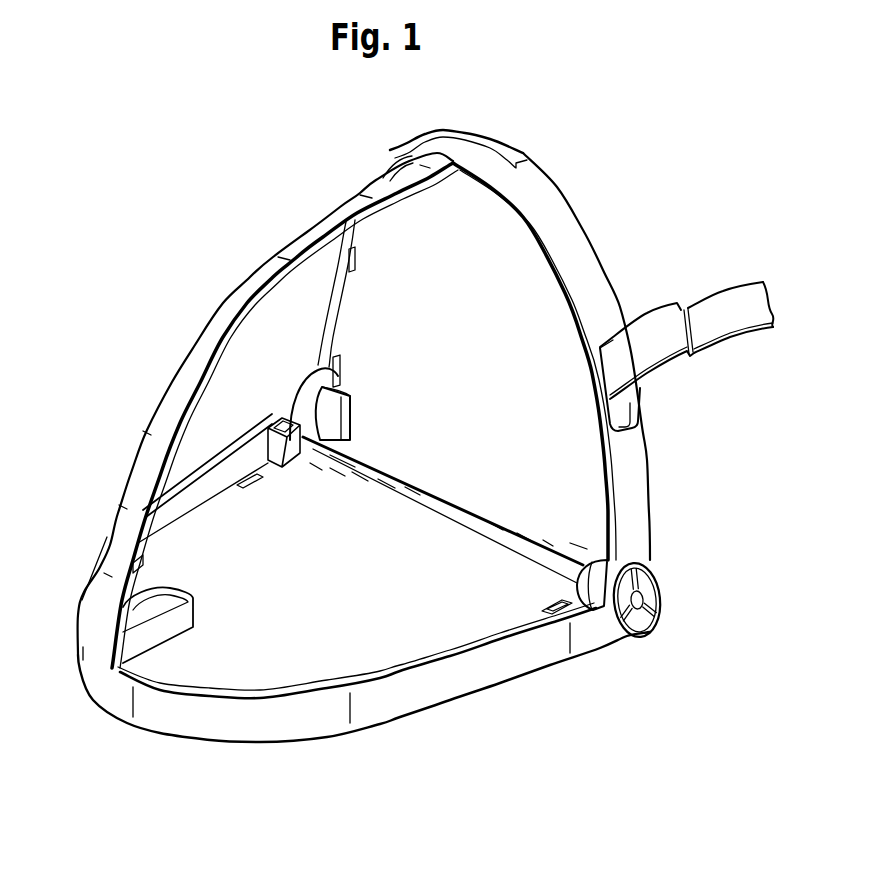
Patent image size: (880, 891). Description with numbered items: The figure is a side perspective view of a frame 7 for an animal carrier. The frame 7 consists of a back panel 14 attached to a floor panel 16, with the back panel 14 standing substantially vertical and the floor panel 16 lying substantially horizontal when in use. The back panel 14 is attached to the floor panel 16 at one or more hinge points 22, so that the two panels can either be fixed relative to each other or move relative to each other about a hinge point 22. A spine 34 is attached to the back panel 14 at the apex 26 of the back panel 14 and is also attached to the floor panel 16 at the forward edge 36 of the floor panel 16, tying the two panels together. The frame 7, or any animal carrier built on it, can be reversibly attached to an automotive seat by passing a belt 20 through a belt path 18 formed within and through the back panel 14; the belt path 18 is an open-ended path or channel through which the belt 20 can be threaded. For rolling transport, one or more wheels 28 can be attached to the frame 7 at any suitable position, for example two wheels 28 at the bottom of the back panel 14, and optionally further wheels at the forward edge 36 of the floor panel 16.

The frame 7 is at (130, 270).
The back panel 14 is at (497, 228).
The floor panel 16 is at (352, 577).
The belt path 18 is at (627, 420).
The belt 20 is at (750, 290).
The hinge point 22 is at (347, 420).
The apex 26 is at (455, 155).
The wheel 28 is at (660, 583).
The spine 34 is at (273, 273).
The forward edge 36 is at (100, 667).